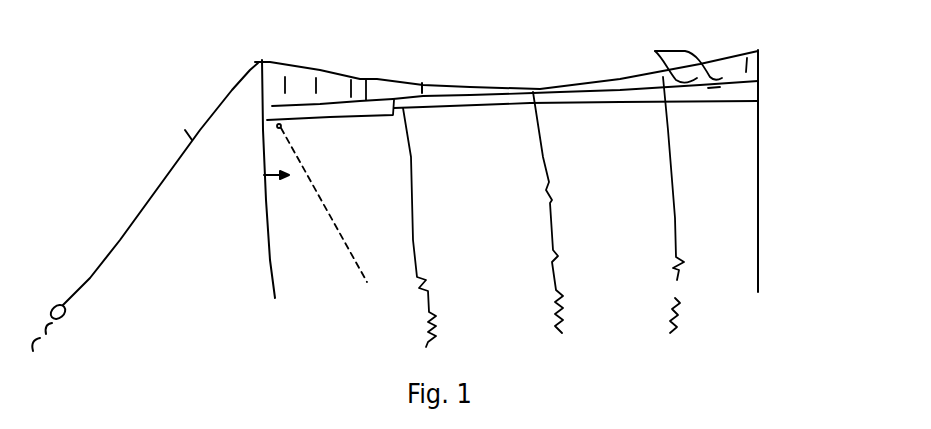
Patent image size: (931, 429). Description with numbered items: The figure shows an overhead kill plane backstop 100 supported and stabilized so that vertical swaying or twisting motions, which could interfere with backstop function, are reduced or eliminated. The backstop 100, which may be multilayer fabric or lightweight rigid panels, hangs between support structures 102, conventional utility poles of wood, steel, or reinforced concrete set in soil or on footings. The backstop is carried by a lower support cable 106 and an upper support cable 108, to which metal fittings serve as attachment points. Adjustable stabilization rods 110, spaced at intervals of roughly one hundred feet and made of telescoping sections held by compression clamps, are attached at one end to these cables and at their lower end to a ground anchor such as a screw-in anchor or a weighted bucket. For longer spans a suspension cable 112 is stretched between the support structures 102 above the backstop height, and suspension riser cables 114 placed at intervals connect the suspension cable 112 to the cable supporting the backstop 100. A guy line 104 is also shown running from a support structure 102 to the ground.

The overhead kill plane backstop 100 is at (625, 105).
The support structures 102 is at (262, 226).
The guy line 104 is at (100, 250).
The lower support cable 106 is at (386, 112).
The upper support cable 108 is at (375, 78).
The adjustable stabilization rods 110 is at (413, 240).
The suspension cable 112 is at (310, 68).
The suspension riser cables 114 is at (655, 51).